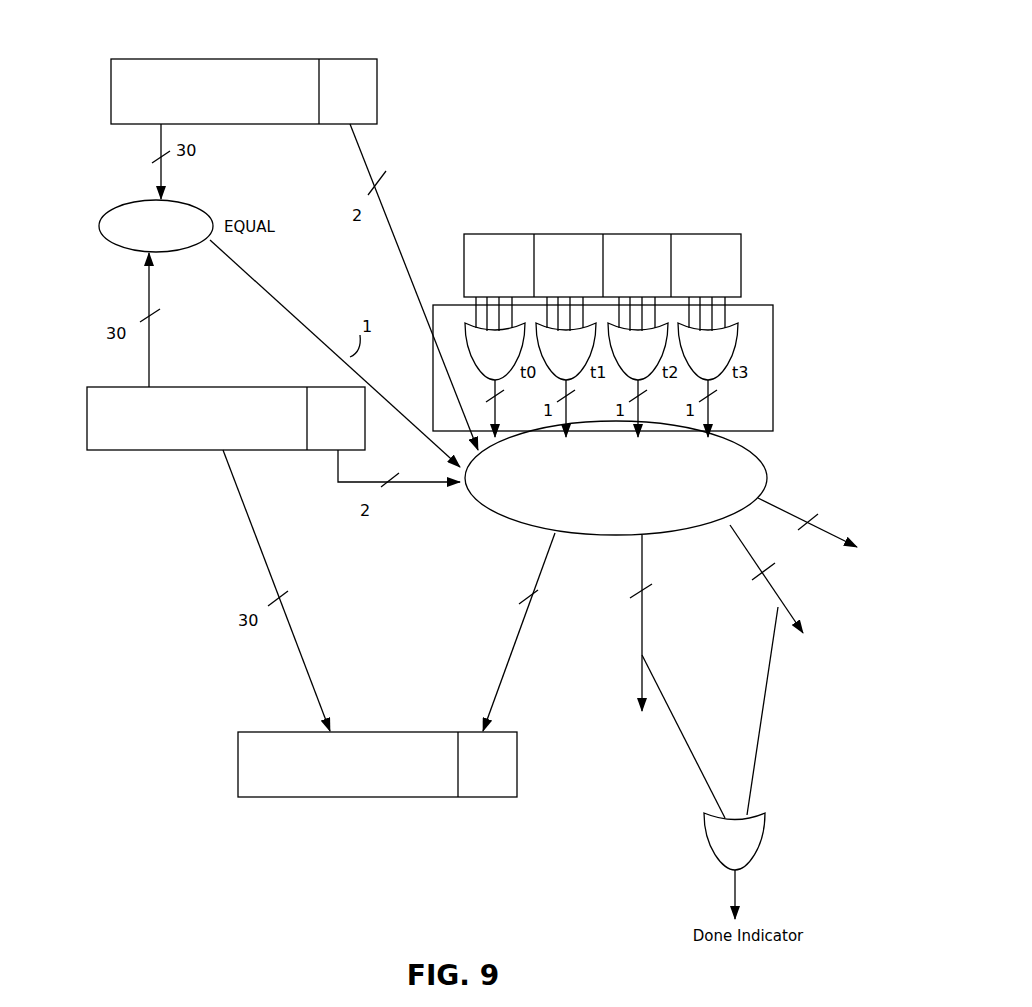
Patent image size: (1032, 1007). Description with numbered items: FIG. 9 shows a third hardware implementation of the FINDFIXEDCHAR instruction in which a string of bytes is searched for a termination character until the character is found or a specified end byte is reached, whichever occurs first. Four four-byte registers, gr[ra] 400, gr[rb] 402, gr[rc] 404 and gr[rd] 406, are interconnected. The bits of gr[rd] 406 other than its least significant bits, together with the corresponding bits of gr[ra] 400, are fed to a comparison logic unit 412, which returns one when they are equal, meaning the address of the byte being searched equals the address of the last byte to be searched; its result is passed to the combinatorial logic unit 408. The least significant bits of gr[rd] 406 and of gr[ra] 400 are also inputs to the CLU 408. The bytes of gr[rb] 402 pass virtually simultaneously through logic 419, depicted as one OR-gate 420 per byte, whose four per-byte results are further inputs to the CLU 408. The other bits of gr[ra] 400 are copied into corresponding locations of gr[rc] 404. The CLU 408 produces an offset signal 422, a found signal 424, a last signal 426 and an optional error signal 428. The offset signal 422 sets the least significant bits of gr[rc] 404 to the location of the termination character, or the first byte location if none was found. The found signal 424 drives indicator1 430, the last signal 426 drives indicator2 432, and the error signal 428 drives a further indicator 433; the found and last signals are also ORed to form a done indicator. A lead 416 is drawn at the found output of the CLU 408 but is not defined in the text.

The register gr[ra] 400 is at (267, 387).
The register gr[rb] 402 is at (658, 234).
The register gr[rc] 404 is at (422, 797).
The register gr[rd] 406 is at (313, 59).
The combinatorial logic unit 408 is at (767, 472).
The comparison logic unit 412 is at (98, 220).
The found output line 416 is at (670, 533).
The logic for comparing a byte with a termination character 419 is at (773, 370).
The OR-gate 420 is at (468, 350).
The offset signal 422 is at (538, 555).
The found signal 424 is at (643, 607).
The last signal 426 is at (733, 525).
The error signal 428 is at (825, 528).
The indicator1 430 is at (635, 738).
The indicator2 432 is at (822, 663).
The indicator 433 is at (865, 590).